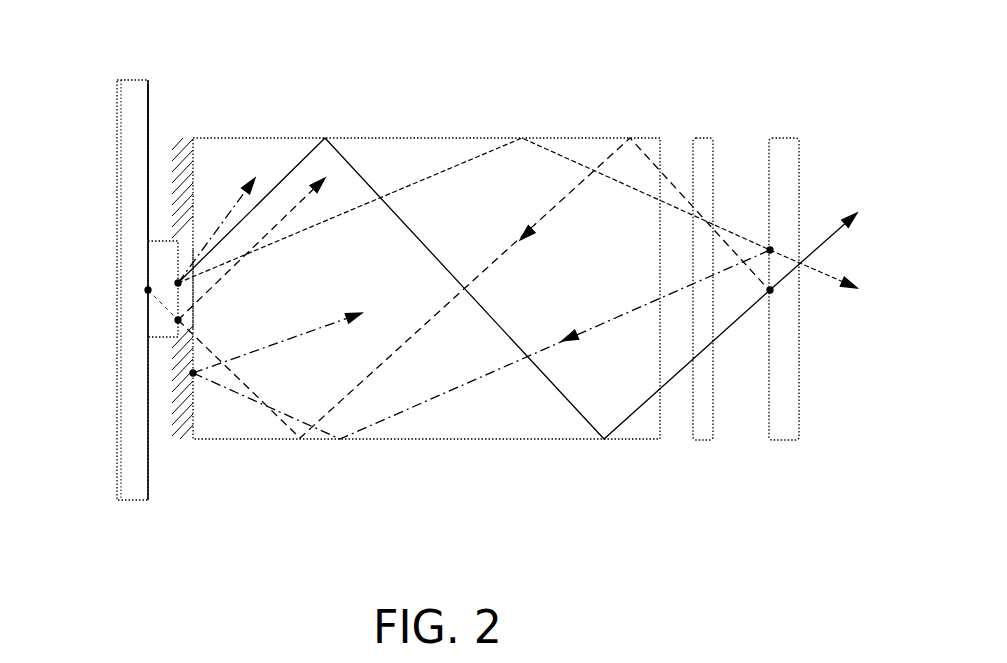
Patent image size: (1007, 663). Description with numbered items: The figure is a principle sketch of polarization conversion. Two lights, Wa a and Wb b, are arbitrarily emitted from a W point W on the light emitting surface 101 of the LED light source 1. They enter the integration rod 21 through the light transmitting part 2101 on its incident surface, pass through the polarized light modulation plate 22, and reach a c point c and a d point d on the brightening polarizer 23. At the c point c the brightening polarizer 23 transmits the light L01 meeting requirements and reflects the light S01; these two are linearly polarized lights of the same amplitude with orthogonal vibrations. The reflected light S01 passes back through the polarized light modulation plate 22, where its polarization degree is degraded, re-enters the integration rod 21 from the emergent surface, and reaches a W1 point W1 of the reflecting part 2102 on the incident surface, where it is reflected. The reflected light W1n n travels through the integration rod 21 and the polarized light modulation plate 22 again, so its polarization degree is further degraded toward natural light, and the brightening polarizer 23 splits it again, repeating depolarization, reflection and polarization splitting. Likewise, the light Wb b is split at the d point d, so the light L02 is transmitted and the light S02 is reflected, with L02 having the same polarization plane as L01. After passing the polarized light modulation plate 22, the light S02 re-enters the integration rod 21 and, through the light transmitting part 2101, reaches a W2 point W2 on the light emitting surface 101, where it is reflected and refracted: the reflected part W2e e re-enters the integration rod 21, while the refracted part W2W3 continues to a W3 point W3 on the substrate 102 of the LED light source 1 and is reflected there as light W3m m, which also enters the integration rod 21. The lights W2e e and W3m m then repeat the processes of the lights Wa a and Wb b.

The LED light source 1 is at (132, 493).
The light emitting surface 101 is at (178, 333).
The substrate 102 is at (147, 112).
The integration rod 21 is at (436, 438).
The light transmitting part 2101 is at (193, 292).
The reflecting part 2102 is at (193, 165).
The polarized light modulation plate 22 is at (704, 436).
The brightening polarizer 23 is at (786, 436).
The W point W is at (178, 283).
The W1 point W1 is at (193, 373).
The W2 point W2 is at (178, 320).
The W3 point W3 is at (148, 290).
The light Wa a is at (522, 138).
The light Wb b is at (325, 138).
The c point c is at (770, 250).
The d point d is at (770, 290).
The reflected light W2e e is at (258, 240).
The reflected light W3m m is at (226, 218).
The reflected light W1n n is at (286, 335).
The light S01 is at (481, 344).
The light S02 is at (473, 288).
The light L01 is at (813, 282).
The light L02 is at (813, 242).